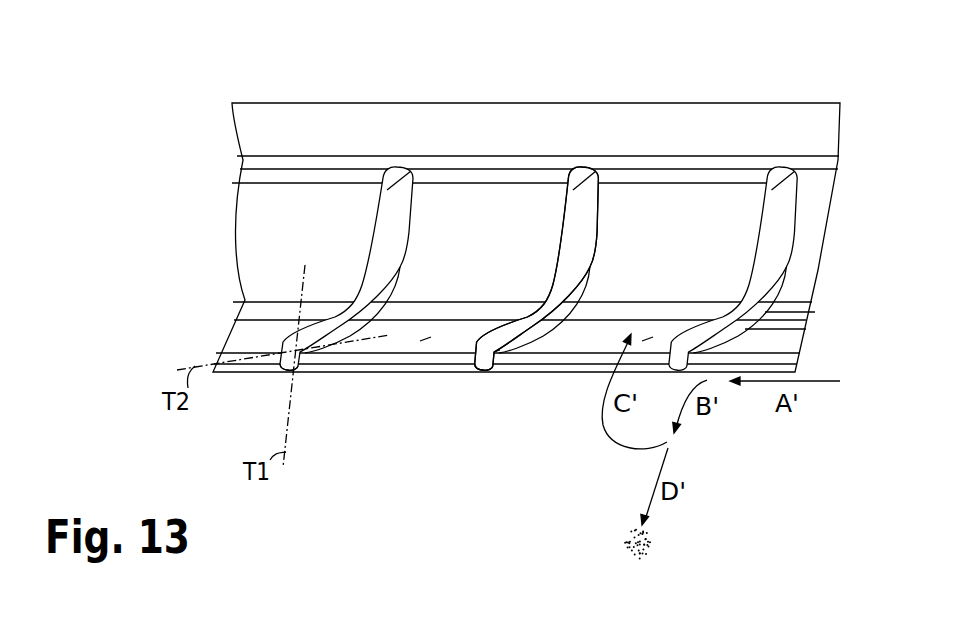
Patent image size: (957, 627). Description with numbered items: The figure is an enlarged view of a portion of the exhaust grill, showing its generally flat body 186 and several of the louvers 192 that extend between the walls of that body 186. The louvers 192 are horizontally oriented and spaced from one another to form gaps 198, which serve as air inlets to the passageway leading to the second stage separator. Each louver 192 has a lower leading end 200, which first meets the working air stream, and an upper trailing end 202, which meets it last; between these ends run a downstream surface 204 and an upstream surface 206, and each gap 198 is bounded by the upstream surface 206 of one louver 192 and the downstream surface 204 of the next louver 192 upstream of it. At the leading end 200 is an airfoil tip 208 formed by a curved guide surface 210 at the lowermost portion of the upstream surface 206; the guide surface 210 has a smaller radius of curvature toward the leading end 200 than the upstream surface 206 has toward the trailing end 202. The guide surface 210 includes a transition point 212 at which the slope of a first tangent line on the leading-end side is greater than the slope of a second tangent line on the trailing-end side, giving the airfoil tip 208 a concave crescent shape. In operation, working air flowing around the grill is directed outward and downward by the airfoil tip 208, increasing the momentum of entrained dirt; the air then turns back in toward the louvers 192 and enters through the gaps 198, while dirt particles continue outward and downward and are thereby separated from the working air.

The body 186 is at (281, 102).
The louver 192 is at (413, 164).
The gap 198 is at (425, 338).
The lower leading end 200 is at (472, 372).
The upper trailing end 202 is at (408, 172).
The downstream surface 204 is at (373, 237).
The upstream surface 206 is at (400, 298).
The airfoil tip 208 is at (308, 356).
The curved guide surface 210 is at (493, 353).
The transition point 212 is at (297, 350).